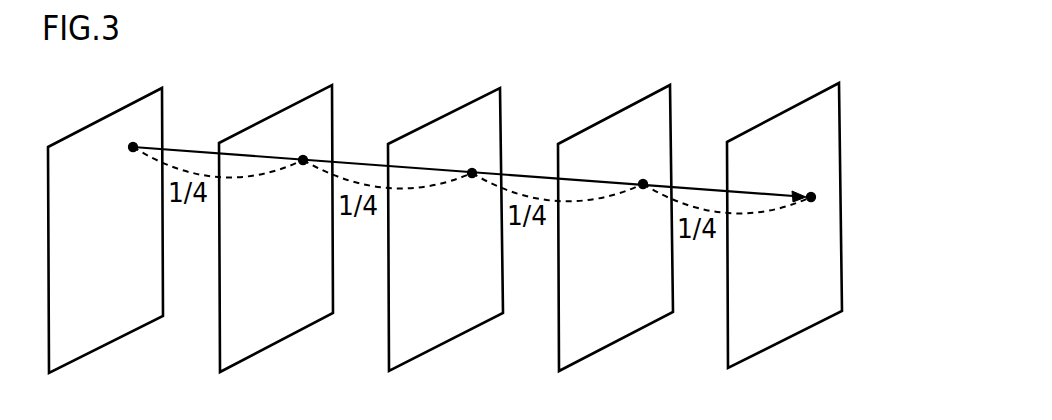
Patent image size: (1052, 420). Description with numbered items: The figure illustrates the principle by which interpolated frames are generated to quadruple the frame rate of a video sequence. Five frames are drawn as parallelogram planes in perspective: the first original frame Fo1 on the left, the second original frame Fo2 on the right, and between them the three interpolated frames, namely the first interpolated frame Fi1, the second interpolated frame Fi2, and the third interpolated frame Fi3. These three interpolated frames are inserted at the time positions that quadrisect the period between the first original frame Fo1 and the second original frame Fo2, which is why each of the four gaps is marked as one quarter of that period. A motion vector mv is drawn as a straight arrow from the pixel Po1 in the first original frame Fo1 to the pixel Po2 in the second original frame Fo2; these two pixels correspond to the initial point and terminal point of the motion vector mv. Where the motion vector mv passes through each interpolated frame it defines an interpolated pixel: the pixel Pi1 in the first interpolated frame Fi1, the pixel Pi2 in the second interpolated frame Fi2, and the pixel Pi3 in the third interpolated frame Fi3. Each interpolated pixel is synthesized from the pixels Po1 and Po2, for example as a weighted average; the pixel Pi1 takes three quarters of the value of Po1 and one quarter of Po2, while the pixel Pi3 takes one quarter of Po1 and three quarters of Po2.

The first original frame Fo1 is at (165, 114).
The first interpolated frame Fi1 is at (334, 110).
The second interpolated frame Fi2 is at (503, 110).
The third interpolated frame Fi3 is at (672, 110).
The second original frame Fo2 is at (842, 110).
The pixel in the first original frame Po1 is at (131, 144).
The pixel in the first interpolated frame Pi1 is at (301, 156).
The pixel in the second interpolated frame Pi2 is at (476, 171).
The pixel in the third interpolated frame Pi3 is at (646, 182).
The pixel in the second original frame Po2 is at (814, 195).
The motion vector mv is at (339, 161).